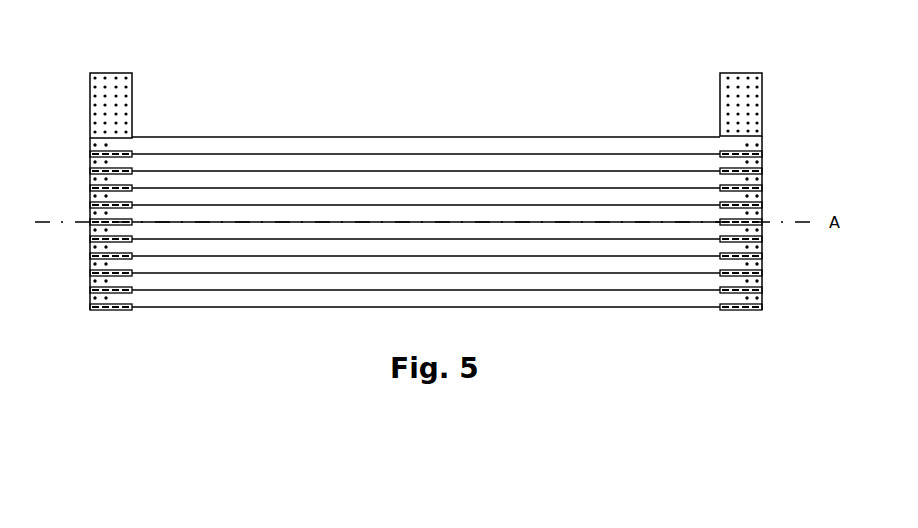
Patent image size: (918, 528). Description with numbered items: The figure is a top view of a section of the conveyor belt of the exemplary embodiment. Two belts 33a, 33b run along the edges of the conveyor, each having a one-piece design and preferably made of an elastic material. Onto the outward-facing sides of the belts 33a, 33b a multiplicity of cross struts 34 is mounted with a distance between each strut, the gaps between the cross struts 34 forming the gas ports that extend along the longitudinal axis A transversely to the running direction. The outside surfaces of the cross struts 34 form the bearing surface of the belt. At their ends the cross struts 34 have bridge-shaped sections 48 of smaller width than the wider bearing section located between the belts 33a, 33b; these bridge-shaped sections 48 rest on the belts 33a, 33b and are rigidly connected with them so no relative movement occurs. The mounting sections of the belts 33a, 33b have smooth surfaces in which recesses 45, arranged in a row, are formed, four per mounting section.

The recesses 45 is at (132, 74).
The belt 33b is at (232, 95).
The belt 33a is at (720, 80).
The cross struts 34 is at (190, 293).
The bridge-shaped sections 48 is at (117, 293).